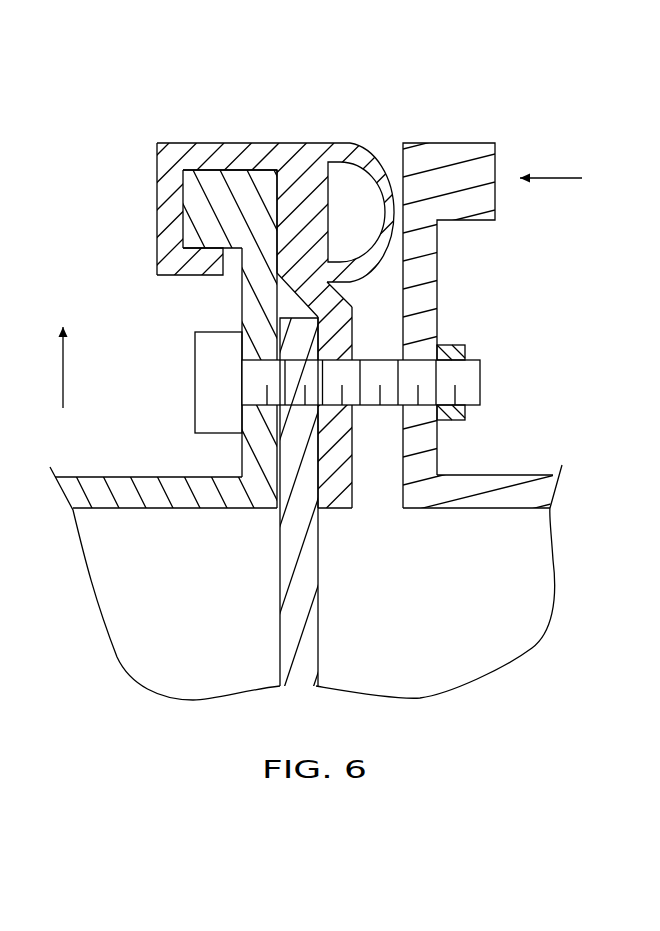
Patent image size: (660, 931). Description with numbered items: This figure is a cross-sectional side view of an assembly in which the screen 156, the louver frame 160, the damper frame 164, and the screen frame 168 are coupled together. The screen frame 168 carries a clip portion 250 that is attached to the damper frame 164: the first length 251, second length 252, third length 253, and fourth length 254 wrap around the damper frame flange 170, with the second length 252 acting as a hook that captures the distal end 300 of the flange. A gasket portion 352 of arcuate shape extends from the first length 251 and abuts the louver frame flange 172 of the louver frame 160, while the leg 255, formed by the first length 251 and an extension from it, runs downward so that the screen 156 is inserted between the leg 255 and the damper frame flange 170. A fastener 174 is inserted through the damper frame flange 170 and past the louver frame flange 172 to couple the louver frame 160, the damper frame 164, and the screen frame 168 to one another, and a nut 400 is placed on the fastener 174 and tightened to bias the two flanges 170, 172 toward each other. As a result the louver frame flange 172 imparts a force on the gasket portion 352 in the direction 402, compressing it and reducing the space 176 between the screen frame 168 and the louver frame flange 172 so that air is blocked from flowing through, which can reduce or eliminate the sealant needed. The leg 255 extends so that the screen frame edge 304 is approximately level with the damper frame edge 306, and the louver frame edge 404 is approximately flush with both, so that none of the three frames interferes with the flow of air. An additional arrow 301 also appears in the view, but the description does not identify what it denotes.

The screen 156 is at (303, 573).
The louver frame 160 is at (444, 330).
The damper frame 164 is at (102, 325).
The screen frame 168 is at (330, 325).
The damper frame flange 170 is at (263, 300).
The louver frame flange 172 is at (478, 330).
The fastener 174 is at (218, 367).
The space 176 is at (405, 200).
The clip portion 250 is at (330, 333).
The first length 251 is at (330, 343).
The second length 252 is at (330, 300).
The third length 253 is at (178, 220).
The fourth length 254 is at (200, 263).
The leg 255 is at (340, 467).
The distal end 300 is at (222, 357).
The direction 301 is at (62, 377).
The screen frame edge 304 is at (335, 510).
The damper frame edge 306 is at (205, 510).
The gasket portion 352 is at (370, 140).
The nut 400 is at (447, 347).
The direction 402 is at (556, 177).
The louver frame edge 404 is at (433, 510).